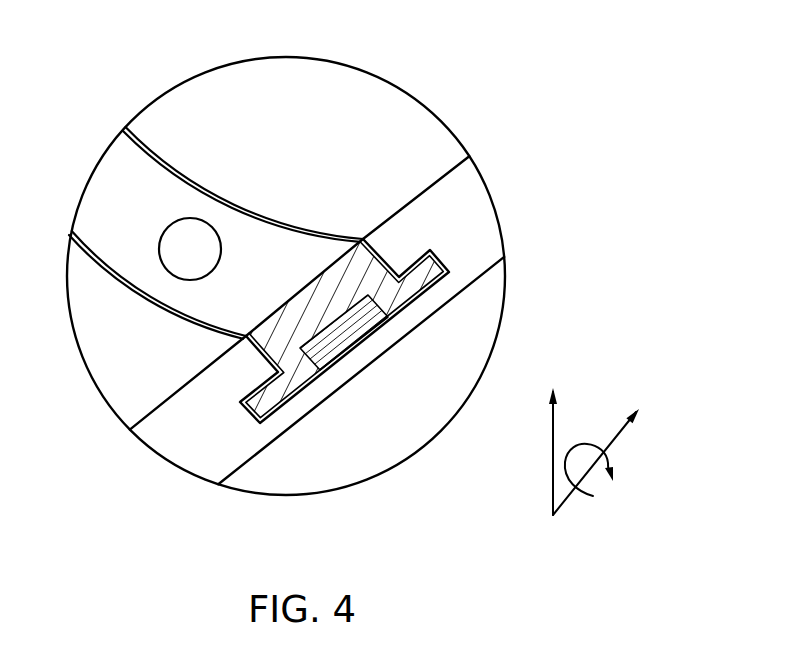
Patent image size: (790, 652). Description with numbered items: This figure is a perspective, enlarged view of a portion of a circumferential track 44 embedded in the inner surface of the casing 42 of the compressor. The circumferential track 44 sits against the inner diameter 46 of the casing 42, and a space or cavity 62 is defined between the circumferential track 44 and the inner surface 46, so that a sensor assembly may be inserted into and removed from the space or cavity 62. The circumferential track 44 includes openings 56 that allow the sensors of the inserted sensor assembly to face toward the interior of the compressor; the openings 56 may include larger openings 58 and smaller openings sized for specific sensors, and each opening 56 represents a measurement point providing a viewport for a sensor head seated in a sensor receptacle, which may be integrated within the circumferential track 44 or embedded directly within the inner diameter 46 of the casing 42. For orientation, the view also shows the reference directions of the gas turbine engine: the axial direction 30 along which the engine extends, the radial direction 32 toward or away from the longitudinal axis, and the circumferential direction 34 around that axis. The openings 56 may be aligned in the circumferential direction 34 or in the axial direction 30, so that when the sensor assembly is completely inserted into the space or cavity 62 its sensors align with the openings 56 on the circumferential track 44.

The axial direction 30 is at (618, 442).
The radial direction 32 is at (548, 435).
The circumferential direction 34 is at (578, 443).
The casing 42 is at (482, 228).
The circumferential track 44 is at (303, 260).
The inner diameter of the casing 46 is at (437, 155).
The openings 56 is at (195, 218).
The larger openings 58 is at (208, 245).
The space or cavity 62 is at (325, 350).